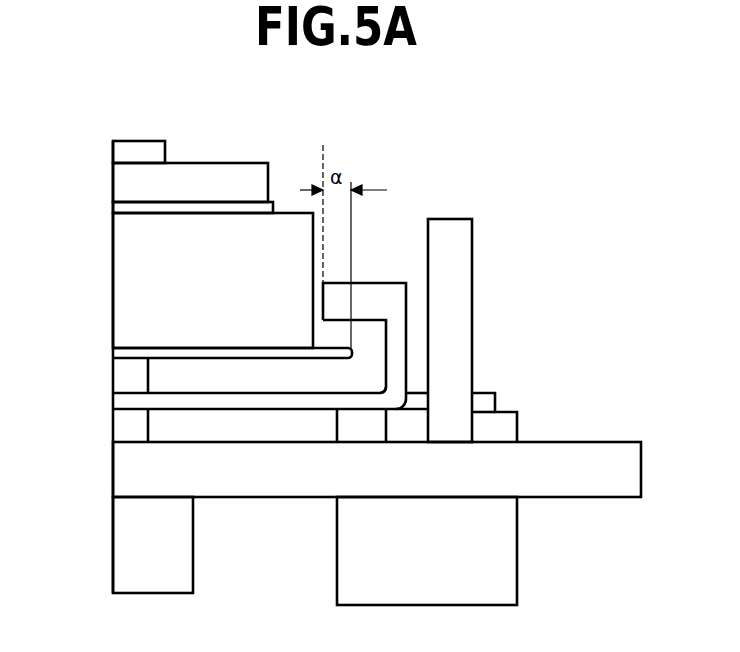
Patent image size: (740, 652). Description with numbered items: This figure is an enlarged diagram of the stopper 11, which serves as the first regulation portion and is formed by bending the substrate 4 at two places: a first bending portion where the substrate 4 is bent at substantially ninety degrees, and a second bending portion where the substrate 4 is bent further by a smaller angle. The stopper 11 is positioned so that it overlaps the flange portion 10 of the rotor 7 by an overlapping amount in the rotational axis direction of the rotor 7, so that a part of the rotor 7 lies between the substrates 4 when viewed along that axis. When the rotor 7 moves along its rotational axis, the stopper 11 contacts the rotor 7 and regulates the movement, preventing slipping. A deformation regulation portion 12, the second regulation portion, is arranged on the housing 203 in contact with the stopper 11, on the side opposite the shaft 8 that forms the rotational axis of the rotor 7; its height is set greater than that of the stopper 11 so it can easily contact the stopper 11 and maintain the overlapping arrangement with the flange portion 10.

The substrate 4 is at (257, 405).
The rotor 7 is at (140, 268).
The shaft 8 is at (137, 141).
The flange portion 10 is at (352, 356).
The stopper 11 is at (372, 307).
The deformation regulation portion 12 is at (462, 240).
The housing 203 is at (570, 452).